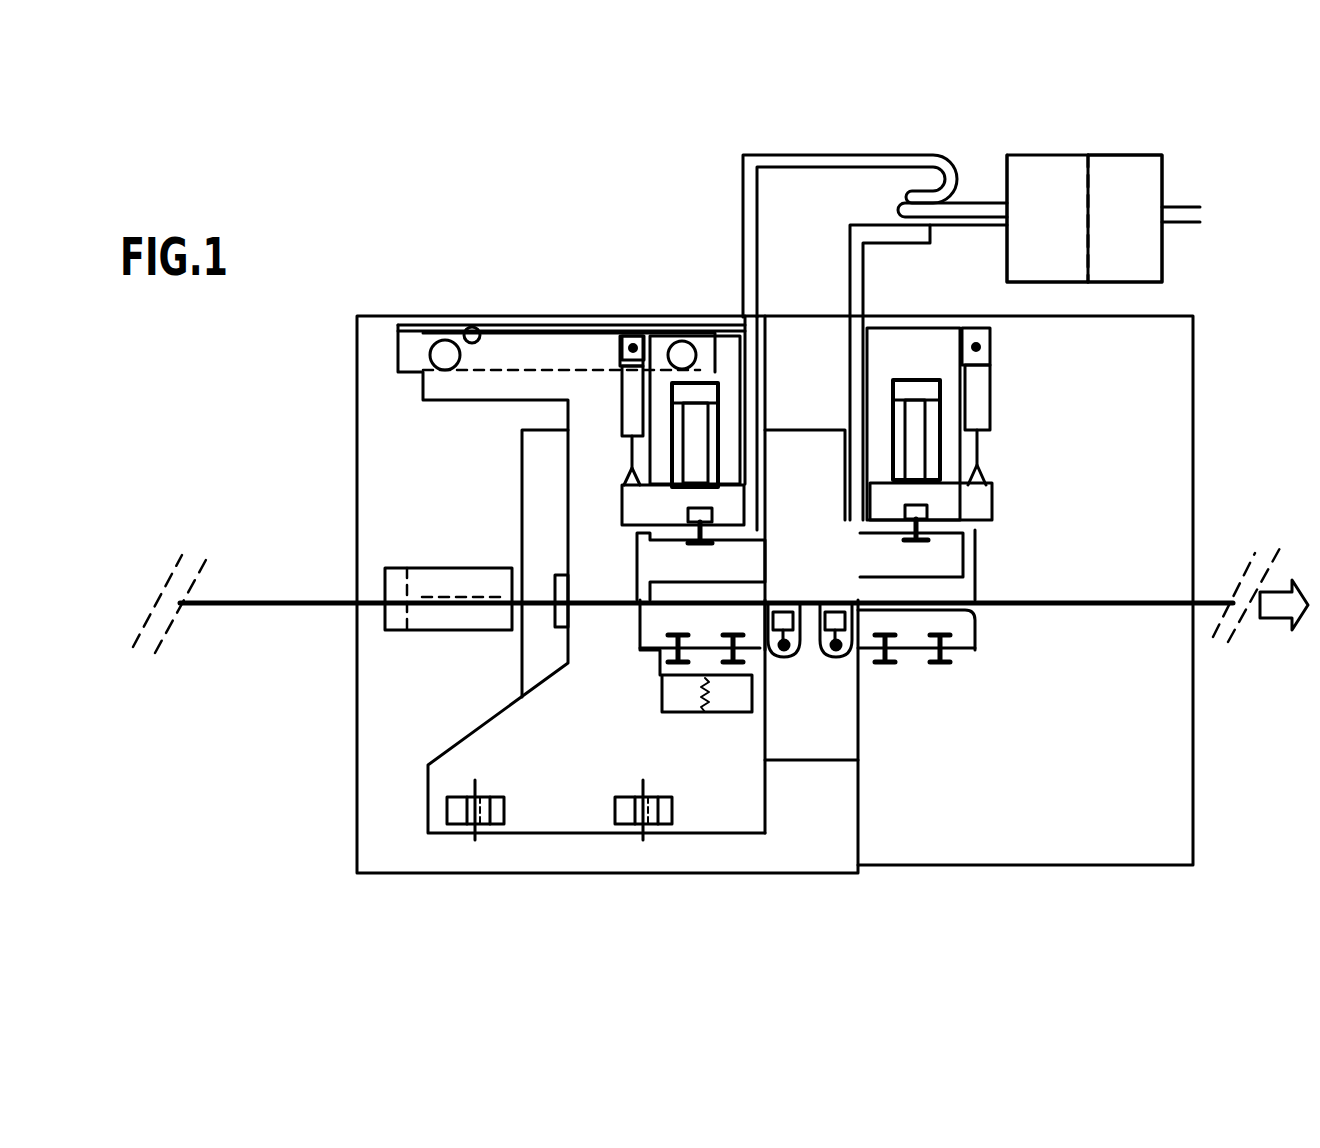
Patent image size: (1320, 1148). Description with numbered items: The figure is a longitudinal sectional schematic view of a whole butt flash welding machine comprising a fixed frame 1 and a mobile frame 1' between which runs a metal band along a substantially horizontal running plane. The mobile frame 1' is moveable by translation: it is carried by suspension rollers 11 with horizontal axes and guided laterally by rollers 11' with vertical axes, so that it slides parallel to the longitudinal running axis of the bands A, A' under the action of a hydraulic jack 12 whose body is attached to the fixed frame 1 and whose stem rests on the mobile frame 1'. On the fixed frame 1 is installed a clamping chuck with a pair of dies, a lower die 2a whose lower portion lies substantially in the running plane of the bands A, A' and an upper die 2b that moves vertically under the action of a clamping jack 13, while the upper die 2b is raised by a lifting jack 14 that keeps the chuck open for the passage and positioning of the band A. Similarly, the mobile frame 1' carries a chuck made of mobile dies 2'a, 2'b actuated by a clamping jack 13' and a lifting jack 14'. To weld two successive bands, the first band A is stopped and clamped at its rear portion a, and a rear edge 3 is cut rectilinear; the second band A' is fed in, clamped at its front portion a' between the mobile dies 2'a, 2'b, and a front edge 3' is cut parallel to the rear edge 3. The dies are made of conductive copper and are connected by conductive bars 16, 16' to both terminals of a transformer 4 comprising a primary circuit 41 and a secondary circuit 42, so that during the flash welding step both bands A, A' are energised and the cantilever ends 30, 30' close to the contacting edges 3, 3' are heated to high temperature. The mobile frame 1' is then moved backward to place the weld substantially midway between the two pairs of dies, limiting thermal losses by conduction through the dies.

The fixed frame 1 is at (811, 624).
The mobile frame 1' is at (581, 579).
The lower die 2a is at (962, 625).
The mobile lower die 2'a is at (674, 658).
The upper die 2b is at (940, 562).
The mobile upper die 2'b is at (671, 458).
The rear edge 3 is at (831, 673).
The front edge 3' is at (791, 673).
The transformer 4 is at (1164, 160).
The suspension rollers 11 is at (563, 313).
The guide rollers 11' is at (591, 856).
The hydraulic jack 12 is at (463, 567).
The clamping jack 13 is at (928, 388).
The clamping jack 13' is at (688, 370).
The lifting jack 14 is at (1012, 425).
The lifting jack 14' is at (597, 370).
The conductive bar 16 is at (928, 372).
The conductive bar 16' is at (842, 236).
The cantilever end 30 is at (833, 592).
The cantilever end 30' is at (798, 577).
The primary circuit 41 is at (1120, 175).
The secondary circuit 42 is at (1045, 175).
The rear portion a is at (912, 670).
The front portion a' is at (701, 690).
The first band A is at (744, 584).
The second band A' is at (239, 617).